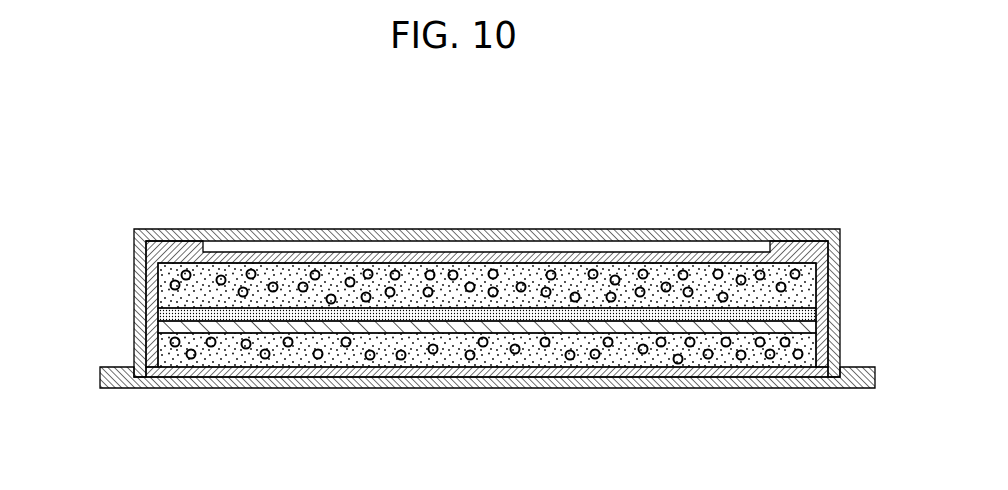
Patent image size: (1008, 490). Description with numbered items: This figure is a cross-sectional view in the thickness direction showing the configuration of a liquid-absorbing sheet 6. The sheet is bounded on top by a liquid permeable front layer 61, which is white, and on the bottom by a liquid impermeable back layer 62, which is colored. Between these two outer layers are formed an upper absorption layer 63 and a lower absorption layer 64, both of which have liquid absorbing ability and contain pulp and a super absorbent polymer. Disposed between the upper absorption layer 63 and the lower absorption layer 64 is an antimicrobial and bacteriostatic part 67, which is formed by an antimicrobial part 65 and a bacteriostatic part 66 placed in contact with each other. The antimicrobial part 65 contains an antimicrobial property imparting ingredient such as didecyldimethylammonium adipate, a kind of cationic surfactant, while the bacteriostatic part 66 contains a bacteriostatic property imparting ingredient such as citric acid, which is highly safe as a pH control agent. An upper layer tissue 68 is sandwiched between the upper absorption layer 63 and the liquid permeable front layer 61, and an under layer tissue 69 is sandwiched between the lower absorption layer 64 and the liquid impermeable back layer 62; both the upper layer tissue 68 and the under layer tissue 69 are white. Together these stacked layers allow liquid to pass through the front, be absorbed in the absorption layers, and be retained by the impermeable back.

The liquid-absorbing sheet 6 is at (737, 200).
The liquid permeable front layer 61 is at (167, 229).
The liquid impermeable back layer 62 is at (657, 382).
The upper absorption layer 63 is at (798, 289).
The lower absorption layer 64 is at (798, 344).
The antimicrobial part 65 is at (172, 326).
The bacteriostatic part 66 is at (158, 314).
The antimicrobial and bacteriostatic part 67 is at (65, 285).
The upper layer tissue 68 is at (240, 252).
The under layer tissue 69 is at (555, 372).